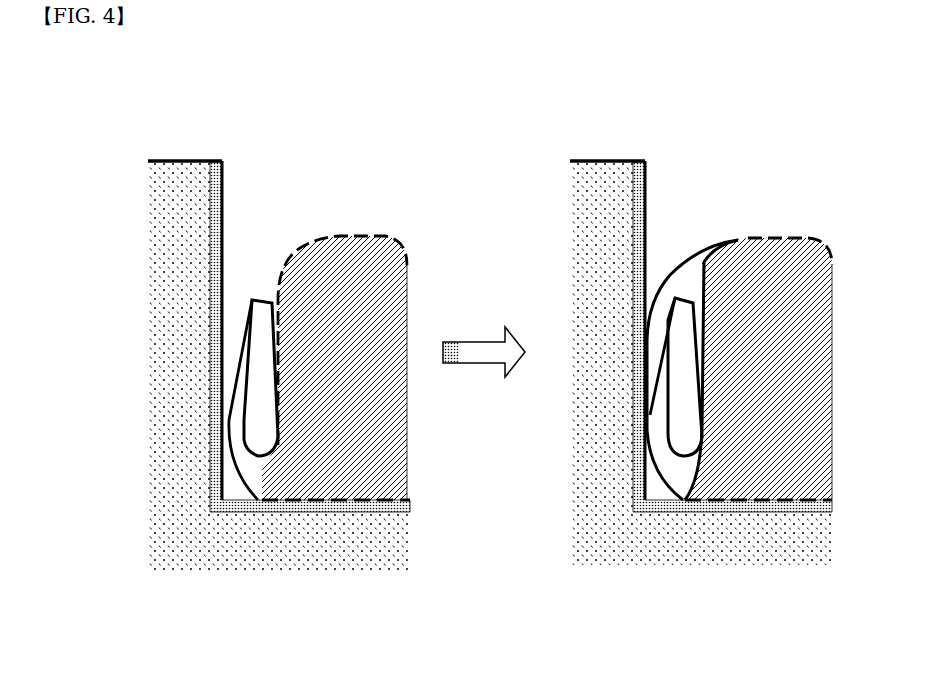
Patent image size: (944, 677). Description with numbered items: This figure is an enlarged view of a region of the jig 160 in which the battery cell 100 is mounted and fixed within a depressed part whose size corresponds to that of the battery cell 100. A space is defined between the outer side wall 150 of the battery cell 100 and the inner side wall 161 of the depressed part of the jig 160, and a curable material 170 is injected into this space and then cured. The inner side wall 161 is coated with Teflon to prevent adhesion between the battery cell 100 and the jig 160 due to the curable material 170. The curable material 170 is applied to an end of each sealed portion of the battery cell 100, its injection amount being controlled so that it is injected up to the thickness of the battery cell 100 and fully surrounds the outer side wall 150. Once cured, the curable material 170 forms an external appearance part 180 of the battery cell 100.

The battery cell 100 is at (342, 236).
The outer side wall 150 is at (243, 338).
The jig 160 is at (163, 190).
The inner side wall 161 is at (218, 233).
The curable material 170 is at (292, 165).
The external appearance part 180 is at (692, 268).